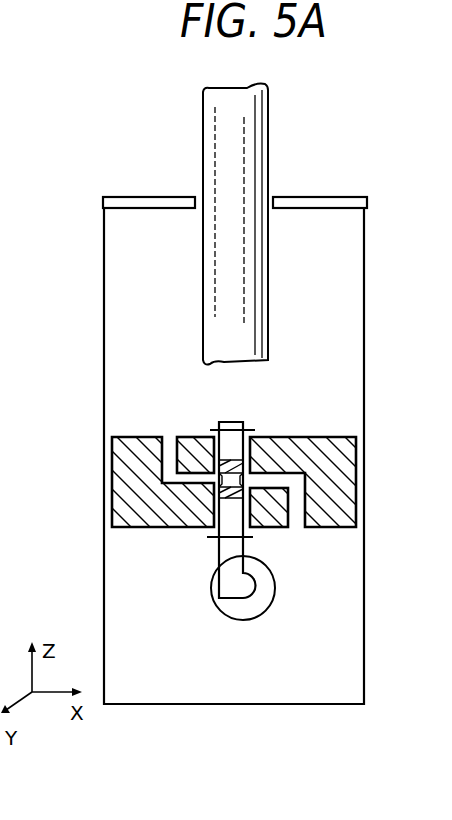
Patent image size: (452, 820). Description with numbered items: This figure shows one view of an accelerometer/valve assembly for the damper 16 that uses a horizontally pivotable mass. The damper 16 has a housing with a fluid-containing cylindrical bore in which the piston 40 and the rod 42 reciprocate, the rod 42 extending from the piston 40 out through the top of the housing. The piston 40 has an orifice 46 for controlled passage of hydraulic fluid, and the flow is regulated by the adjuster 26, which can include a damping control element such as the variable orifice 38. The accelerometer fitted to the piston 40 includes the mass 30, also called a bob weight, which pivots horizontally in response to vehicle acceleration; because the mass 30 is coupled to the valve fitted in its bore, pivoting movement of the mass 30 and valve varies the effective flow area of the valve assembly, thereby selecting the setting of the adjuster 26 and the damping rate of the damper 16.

The damper 16 is at (102, 297).
The rod 42 is at (247, 148).
The adjuster 26 is at (249, 416).
The variable orifice 38 is at (220, 482).
The piston 40 is at (328, 475).
The orifice 46 is at (296, 512).
The mass 30 is at (267, 592).